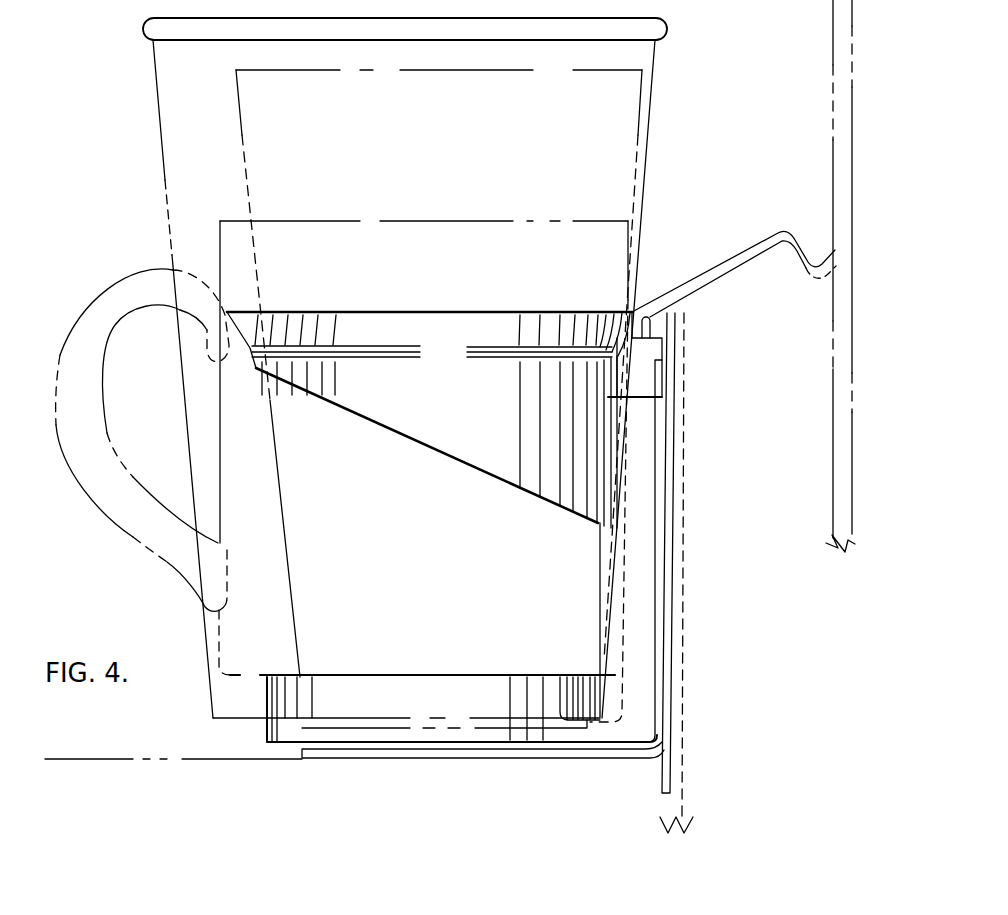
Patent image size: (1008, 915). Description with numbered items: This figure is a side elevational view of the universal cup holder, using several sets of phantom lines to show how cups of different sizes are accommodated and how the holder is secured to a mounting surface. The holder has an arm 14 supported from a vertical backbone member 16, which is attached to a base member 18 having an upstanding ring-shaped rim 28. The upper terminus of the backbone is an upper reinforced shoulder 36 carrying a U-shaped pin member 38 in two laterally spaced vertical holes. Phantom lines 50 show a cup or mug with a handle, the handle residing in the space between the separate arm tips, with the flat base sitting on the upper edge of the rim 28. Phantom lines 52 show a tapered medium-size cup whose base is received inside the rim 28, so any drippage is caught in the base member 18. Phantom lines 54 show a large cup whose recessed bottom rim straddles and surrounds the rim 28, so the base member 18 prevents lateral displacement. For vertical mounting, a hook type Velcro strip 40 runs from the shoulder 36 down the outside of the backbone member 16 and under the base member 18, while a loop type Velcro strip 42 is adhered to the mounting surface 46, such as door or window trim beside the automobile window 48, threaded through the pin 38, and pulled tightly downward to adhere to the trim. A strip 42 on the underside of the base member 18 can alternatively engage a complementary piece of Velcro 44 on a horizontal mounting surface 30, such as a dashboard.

The arm 14 is at (372, 393).
The vertical backbone member 16 is at (602, 550).
The base member 18 is at (278, 738).
The upstanding rim 28 is at (350, 676).
The horizontal reference mounting plane or surface 30 is at (100, 760).
The upper reinforced shoulder 36 is at (640, 385).
The U-shaped pin member 38 is at (652, 318).
The hook type Velcro strip 40 is at (657, 748).
The loop type Velcro strip 42 is at (695, 272).
The complementary piece of Velcro 44 is at (352, 760).
The mounting surface 46 is at (678, 395).
The window 48 is at (840, 468).
The phantom lines showing handled cup 50 is at (420, 221).
The phantom lines showing tapered cup 52 is at (242, 131).
The phantom lines showing large cup 54 is at (158, 109).